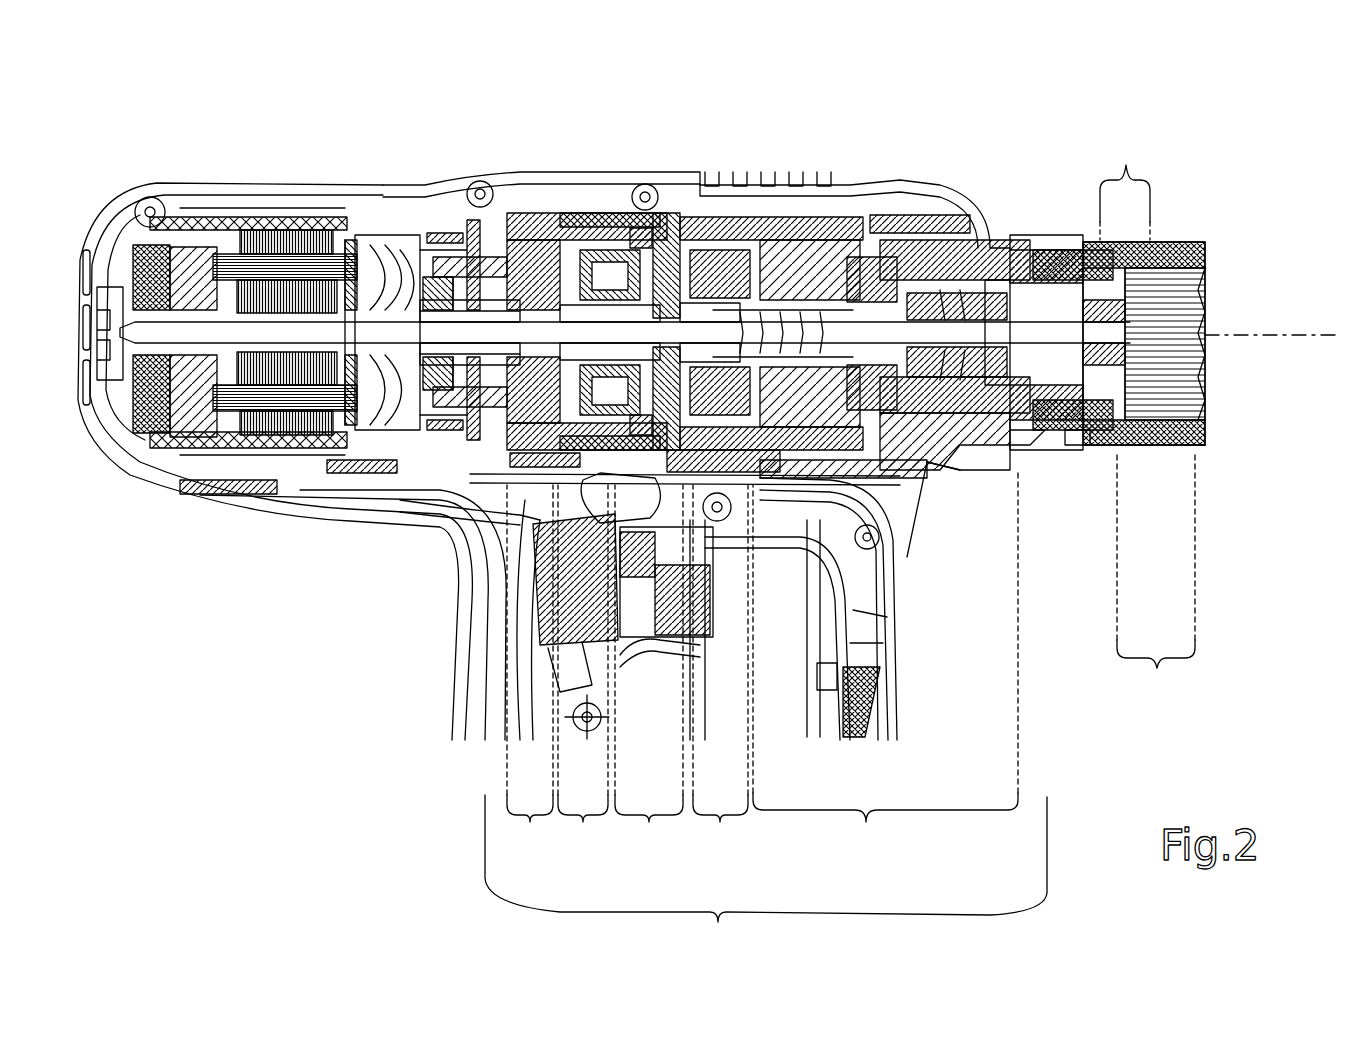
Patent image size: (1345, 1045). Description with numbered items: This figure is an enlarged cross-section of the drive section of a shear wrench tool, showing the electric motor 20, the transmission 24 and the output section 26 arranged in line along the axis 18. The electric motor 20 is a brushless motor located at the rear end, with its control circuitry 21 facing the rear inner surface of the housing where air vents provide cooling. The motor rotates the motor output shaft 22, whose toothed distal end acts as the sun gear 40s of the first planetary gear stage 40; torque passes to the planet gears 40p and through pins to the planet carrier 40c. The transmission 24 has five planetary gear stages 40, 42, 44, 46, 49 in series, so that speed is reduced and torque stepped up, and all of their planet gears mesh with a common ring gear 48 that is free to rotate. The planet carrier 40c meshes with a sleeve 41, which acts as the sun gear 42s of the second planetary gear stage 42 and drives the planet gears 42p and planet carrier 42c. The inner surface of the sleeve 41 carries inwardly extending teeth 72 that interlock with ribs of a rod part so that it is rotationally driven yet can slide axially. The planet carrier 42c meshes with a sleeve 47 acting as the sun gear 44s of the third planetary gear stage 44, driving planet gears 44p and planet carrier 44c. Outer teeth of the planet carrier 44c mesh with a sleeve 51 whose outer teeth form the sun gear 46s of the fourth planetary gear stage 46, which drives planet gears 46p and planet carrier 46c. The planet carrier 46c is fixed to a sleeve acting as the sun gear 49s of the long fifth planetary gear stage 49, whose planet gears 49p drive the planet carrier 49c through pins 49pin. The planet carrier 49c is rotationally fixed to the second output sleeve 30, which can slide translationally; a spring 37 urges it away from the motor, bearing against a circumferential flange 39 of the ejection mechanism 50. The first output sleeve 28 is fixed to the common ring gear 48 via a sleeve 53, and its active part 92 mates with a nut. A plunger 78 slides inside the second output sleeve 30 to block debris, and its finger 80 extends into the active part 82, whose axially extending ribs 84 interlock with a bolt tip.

The axis 18 is at (1318, 340).
The electric motor 20 is at (275, 215).
The control circuitry 21 is at (125, 480).
The motor output shaft 22 is at (323, 487).
The transmission 24 is at (766, 875).
The output section 26 is at (1211, 172).
The first output sleeve 28 is at (1205, 222).
The second output sleeve 30 is at (1210, 290).
The spring 37 is at (990, 445).
The circumferential flange 39 is at (923, 537).
The first planetary gear stage 40 is at (529, 677).
The planet gears of the first planetary gear stage 40p is at (480, 185).
The planet carrier of the first planetary gear stage 40c is at (520, 185).
The sun gear of the first planetary gear stage 40s is at (390, 517).
The sleeve 41 is at (565, 190).
The second planetary gear stage 42 is at (583, 679).
The planet gears of the second planetary gear stage 42p is at (612, 200).
The planet carrier of the second planetary gear stage 42c is at (660, 195).
The sun gear of the second planetary gear stage 42s is at (490, 590).
The third planetary gear stage 44 is at (649, 681).
The planet gears of the third planetary gear stage 44p is at (675, 200).
The sun gear of the third planetary gear stage 44s is at (710, 200).
The planet carrier of the third planetary gear stage 44c is at (880, 230).
The fourth planetary gear stage 46 is at (720, 681).
The planet gears of the fourth planetary gear stage 46p is at (780, 205).
The planet carrier of the fourth planetary gear stage 46c is at (860, 215).
The sun gear of the fourth planetary gear stage 46s is at (760, 450).
The sleeve 47 is at (642, 190).
The common ring gear 48 is at (760, 205).
The fifth planetary gear stage 49 is at (885, 671).
The planet gears of the fifth planetary gear stage 49p is at (845, 210).
The planet carrier of the fifth planetary gear stage 49c is at (1010, 265).
The sun gear of the fifth planetary gear stage 49s is at (1010, 245).
The pins 49pin is at (915, 255).
The ejection mechanism 50 is at (920, 500).
The sleeve 51 is at (800, 215).
The sleeve 53 is at (1000, 250).
The inwardly extending teeth 72 is at (450, 535).
The plunger 78 is at (1078, 445).
The finger 80 is at (1140, 450).
The active part of the second output sleeve 82 is at (1125, 186).
The axially extending ribs 84 is at (1190, 450).
The active part of the first output sleeve 92 is at (1156, 582).